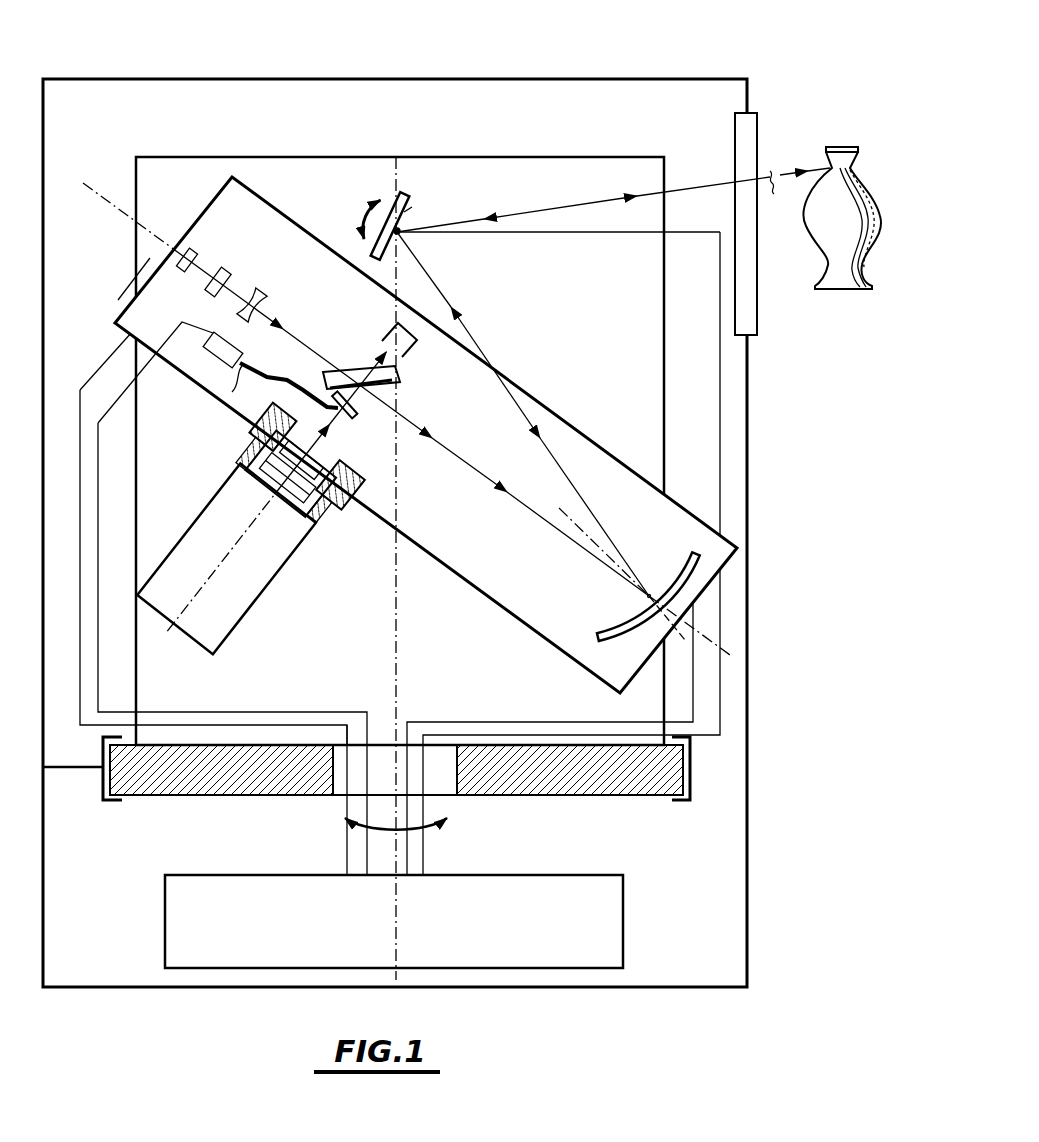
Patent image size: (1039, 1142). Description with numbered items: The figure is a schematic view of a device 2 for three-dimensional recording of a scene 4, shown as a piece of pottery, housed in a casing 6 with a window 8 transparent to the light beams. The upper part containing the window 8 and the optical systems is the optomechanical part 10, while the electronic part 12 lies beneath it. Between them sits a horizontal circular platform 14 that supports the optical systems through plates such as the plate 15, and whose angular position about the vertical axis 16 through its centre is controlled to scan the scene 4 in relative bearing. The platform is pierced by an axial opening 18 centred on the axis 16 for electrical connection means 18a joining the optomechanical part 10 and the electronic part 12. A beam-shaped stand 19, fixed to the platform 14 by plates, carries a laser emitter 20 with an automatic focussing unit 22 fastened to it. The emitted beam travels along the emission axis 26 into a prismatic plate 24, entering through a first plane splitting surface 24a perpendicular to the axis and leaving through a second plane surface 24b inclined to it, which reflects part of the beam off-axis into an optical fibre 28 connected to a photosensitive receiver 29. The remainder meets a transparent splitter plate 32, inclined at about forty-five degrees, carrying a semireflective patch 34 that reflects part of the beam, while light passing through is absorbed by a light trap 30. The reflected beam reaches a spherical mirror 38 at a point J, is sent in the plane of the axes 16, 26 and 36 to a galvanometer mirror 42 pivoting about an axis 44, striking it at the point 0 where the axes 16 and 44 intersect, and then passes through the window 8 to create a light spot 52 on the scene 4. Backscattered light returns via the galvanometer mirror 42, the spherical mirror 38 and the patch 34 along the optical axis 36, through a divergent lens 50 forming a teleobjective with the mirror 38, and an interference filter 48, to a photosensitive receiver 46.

The device 2 is at (790, 538).
The scene 4 is at (846, 130).
The casing 6 is at (465, 79).
The window 8 is at (750, 313).
The optomechanical part 10 is at (317, 217).
The electronic part 12 is at (394, 921).
The horizontal circular platform 14 is at (580, 800).
The plate 15 is at (182, 170).
The vertical axis 16 is at (397, 170).
The axial opening 18 is at (446, 752).
The electrical connection means 18a is at (417, 718).
The beam-shaped stand 19 is at (122, 296).
The laser emitter 20 is at (234, 610).
The automatic focussing unit 22 is at (217, 467).
The prismatic plate 24 is at (312, 390).
The first plane splitting surface 24a is at (348, 414).
The second plane surface 24b is at (372, 412).
The emission axis 26 is at (447, 299).
The optical fibre 28 is at (232, 392).
The photosensitive receiver 29 is at (217, 353).
The light trap 30 is at (402, 371).
The transparent splitter plate 32 is at (402, 380).
The semireflective patch 34 is at (372, 364).
The optical axis 36 is at (100, 192).
The spherical mirror 38 is at (597, 638).
The galvanometer mirror 42 is at (404, 212).
The axis 44 is at (405, 226).
The photosensitive receiver 46 is at (197, 258).
The interference filter 48 is at (230, 275).
The divergent lens 50 is at (262, 300).
The light spot 52 is at (828, 167).
The point of intersection 0 is at (404, 233).
The point J is at (648, 590).